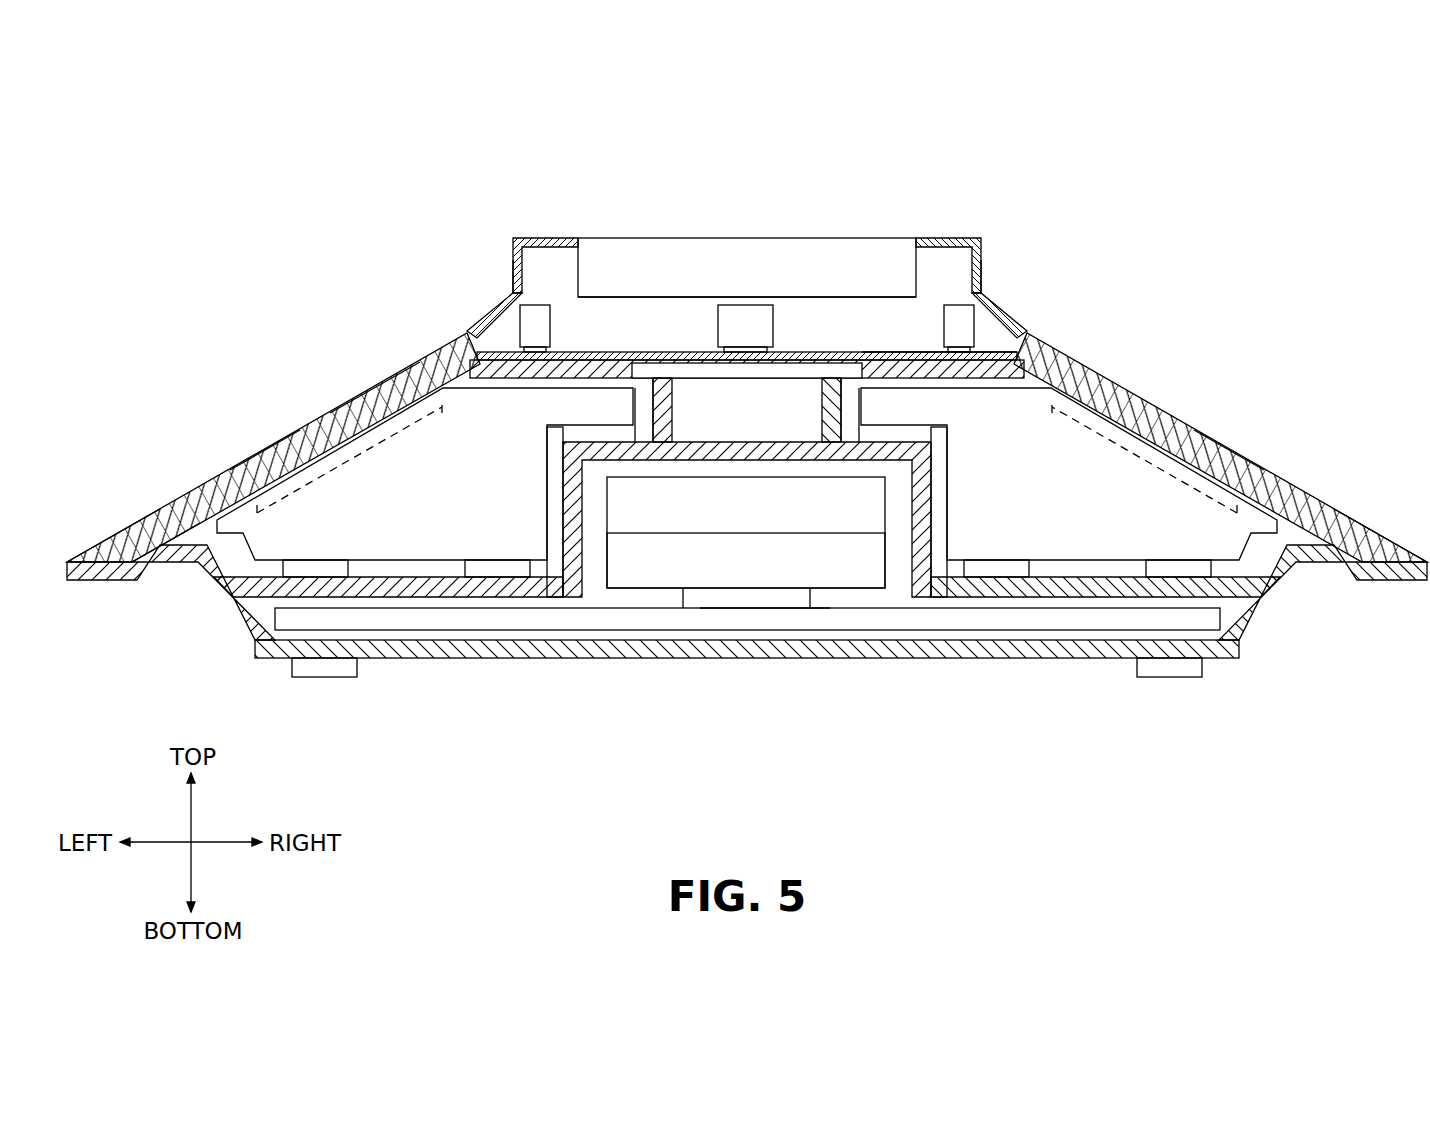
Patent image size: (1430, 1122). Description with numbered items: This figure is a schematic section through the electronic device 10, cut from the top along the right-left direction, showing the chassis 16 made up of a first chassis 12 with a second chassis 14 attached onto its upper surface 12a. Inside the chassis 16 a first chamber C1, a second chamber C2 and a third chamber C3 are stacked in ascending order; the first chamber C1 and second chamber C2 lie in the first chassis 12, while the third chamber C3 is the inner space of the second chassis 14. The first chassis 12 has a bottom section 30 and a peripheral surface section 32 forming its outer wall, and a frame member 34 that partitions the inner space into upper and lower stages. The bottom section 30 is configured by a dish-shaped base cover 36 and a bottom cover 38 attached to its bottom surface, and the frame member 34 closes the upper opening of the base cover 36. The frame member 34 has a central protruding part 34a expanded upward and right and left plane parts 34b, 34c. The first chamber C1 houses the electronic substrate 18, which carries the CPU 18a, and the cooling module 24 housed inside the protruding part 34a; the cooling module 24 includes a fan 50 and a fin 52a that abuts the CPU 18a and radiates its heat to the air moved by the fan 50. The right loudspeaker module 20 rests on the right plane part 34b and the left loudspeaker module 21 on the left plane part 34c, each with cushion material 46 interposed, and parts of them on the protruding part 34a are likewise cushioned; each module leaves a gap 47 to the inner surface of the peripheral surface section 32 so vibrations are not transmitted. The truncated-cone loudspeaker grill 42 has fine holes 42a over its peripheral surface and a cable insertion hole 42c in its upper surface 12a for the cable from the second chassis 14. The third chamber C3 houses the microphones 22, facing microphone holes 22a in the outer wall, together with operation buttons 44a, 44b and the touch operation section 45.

The electronic device 10 is at (229, 174).
The first chassis 12 is at (747, 342).
The upper surface 12a is at (878, 352).
The second chassis 14 is at (804, 206).
The chassis 16 is at (747, 311).
The electronic substrate 18 is at (747, 666).
The CPU 18a is at (767, 600).
The right loudspeaker module 20 is at (1140, 490).
The left loudspeaker module 21 is at (347, 483).
The microphones 22 is at (535, 325).
The microphone holes 22a is at (516, 296).
The cooling module 24 is at (848, 595).
The bottom section 30 is at (747, 677).
The peripheral surface section 32 is at (372, 370).
The frame member 34 is at (747, 468).
The protruding part 34a is at (718, 430).
The right plane part 34b is at (1082, 585).
The left plane part 34c is at (320, 585).
The base cover 36 is at (215, 600).
The bottom cover 38 is at (593, 658).
The loudspeaker grill 42 is at (747, 426).
The holes 42a is at (170, 540).
The cable insertion hole 42c is at (808, 355).
The operation button 44a is at (747, 178).
The operation button 44b is at (650, 257).
The touch operation section 45 is at (474, 330).
The cushion material 46 is at (325, 567).
The gap 47 is at (270, 452).
The fan 50 is at (746, 646).
The fin 52a is at (735, 565).
The first chamber C1 is at (650, 600).
The second chamber C2 is at (148, 513).
The third chamber C3 is at (615, 327).